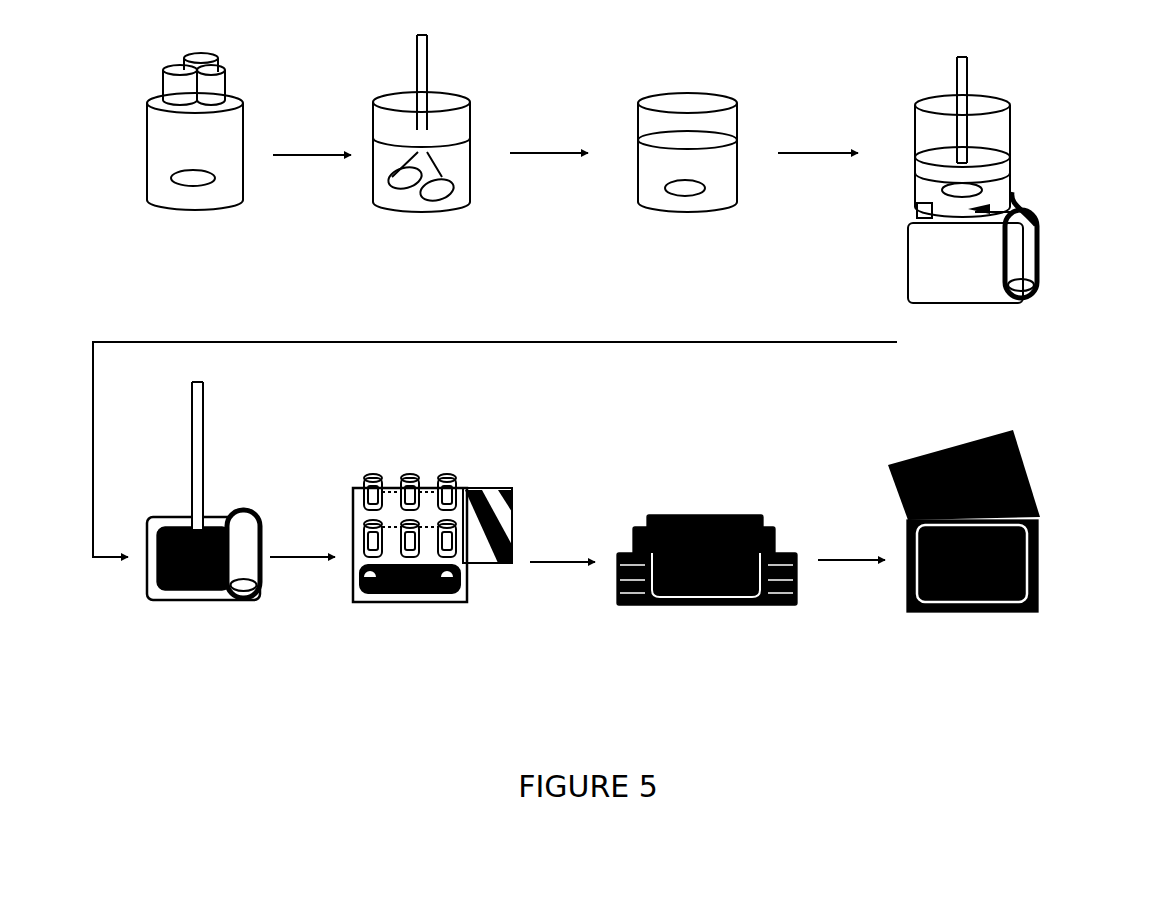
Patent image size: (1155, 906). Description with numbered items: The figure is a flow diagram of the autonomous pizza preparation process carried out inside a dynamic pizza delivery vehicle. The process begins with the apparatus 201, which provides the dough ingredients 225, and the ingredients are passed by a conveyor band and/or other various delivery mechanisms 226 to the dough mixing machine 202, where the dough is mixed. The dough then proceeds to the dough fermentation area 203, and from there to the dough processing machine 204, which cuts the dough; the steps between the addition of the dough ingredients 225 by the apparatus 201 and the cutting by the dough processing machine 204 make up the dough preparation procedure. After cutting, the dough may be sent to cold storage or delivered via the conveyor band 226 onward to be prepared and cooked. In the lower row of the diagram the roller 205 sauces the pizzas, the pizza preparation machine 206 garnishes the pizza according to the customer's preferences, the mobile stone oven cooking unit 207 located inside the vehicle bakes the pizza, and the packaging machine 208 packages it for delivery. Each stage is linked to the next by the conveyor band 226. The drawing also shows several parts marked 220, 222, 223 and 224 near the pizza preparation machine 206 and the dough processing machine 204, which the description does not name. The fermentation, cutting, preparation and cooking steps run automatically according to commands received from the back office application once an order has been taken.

The apparatus 201 is at (195, 152).
The dough mixing machine 202 is at (421, 143).
The dough fermentation area 203 is at (687, 173).
The dough processing machine 204 is at (965, 205).
The roller 205 is at (175, 507).
The pizza preparation machine 206 is at (385, 553).
The mobile stone oven cooking unit 207 is at (702, 574).
The packaging machine 208 is at (950, 531).
The panel 220 is at (512, 480).
The connector 222 is at (1046, 189).
The gas cylinder 223 is at (1048, 262).
The controller 224 is at (908, 198).
The dough ingredient 225 is at (242, 68).
The conveyor band and/or other various delivery mechanisms 226 is at (320, 148).